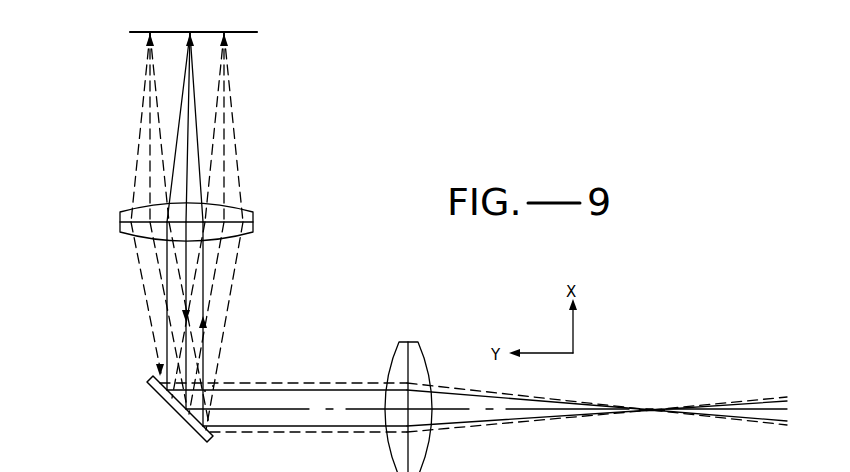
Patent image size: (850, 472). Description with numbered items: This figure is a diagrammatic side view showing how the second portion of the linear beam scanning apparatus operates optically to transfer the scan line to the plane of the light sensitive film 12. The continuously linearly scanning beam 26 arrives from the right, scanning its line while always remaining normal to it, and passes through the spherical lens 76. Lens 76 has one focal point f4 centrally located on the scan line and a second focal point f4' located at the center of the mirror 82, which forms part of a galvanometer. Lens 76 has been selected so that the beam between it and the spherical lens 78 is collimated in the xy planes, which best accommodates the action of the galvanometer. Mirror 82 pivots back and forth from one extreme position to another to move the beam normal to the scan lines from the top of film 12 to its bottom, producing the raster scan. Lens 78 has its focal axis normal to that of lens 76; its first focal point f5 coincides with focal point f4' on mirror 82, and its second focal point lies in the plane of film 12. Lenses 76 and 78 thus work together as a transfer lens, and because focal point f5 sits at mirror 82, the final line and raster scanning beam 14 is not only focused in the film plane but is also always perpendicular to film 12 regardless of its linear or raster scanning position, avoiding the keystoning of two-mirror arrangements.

The light sensitive film 12 is at (247, 33).
The first focal point of lens 78 f5 is at (192, 34).
The line and raster scanning beam 14 is at (195, 170).
The spherical lens 78 is at (255, 216).
The mirror 82 is at (178, 417).
The second focal point of lens 76 f4' is at (250, 374).
The spherical lens 76 is at (399, 342).
The first focal point of lens 76 f4 is at (663, 388).
The continuously linearly scanning beam 26 is at (738, 418).